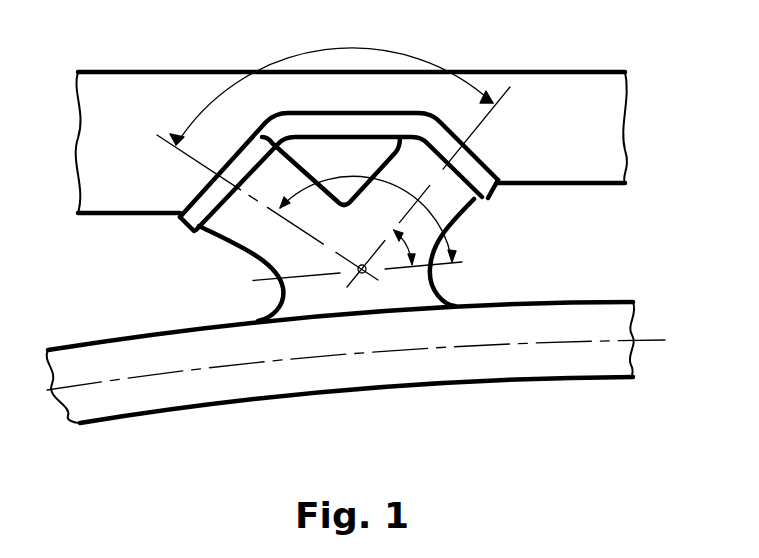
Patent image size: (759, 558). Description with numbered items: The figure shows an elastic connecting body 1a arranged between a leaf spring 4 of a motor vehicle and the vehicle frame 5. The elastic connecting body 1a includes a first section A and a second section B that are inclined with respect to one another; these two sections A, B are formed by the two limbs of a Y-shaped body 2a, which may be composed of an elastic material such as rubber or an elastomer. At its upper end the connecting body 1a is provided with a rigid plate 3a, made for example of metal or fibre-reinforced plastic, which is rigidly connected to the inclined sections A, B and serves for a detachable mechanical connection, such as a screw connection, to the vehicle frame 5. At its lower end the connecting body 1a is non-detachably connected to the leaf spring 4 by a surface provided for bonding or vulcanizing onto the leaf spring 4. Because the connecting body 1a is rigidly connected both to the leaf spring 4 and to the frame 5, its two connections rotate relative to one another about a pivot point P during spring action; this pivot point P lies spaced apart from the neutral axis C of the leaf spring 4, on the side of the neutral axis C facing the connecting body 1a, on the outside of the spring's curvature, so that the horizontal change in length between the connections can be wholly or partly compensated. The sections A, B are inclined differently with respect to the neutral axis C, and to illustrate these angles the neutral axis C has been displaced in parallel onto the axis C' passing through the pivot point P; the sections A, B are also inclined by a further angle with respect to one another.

The vehicle frame 5 is at (93, 115).
The elastic connecting body 1a is at (274, 217).
The rigid plate 3a is at (182, 217).
The Y-shaped body 2a is at (297, 302).
The leaf spring 4 is at (437, 367).
The neutral axis C is at (381, 342).
The pivot point P is at (333, 197).
The first section A is at (267, 233).
The second section B is at (453, 200).
The displaced axis C' is at (468, 279).